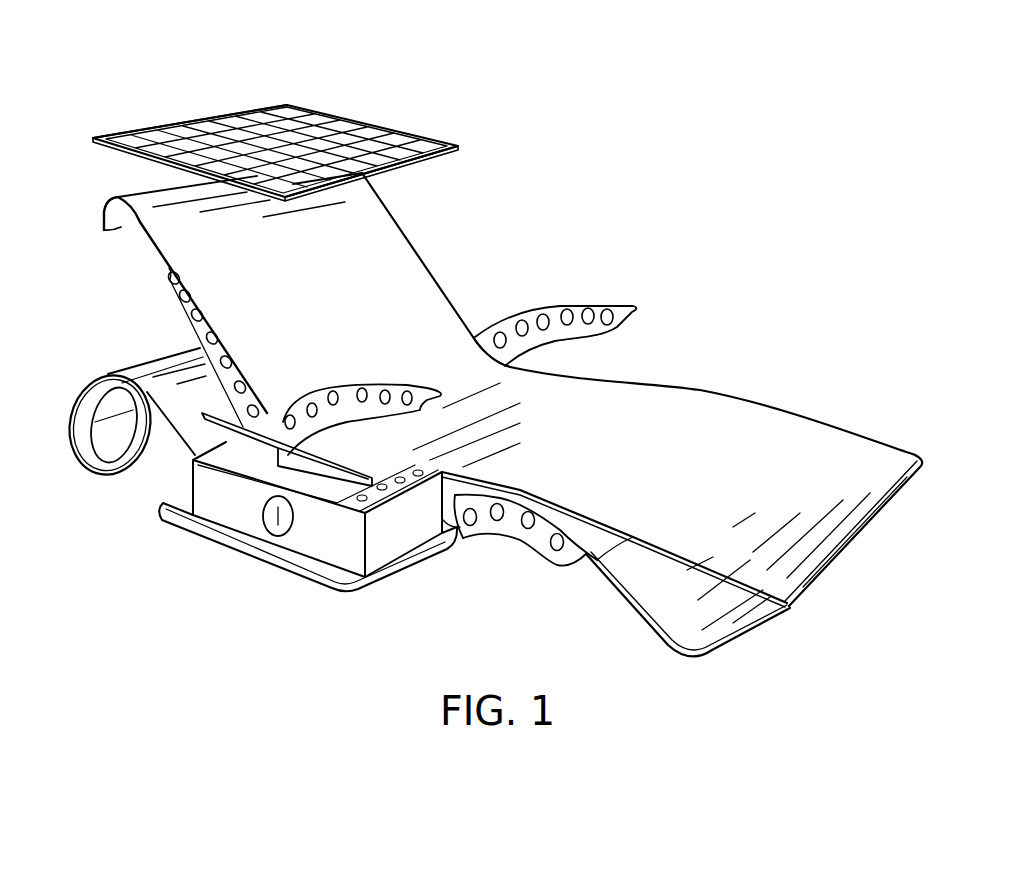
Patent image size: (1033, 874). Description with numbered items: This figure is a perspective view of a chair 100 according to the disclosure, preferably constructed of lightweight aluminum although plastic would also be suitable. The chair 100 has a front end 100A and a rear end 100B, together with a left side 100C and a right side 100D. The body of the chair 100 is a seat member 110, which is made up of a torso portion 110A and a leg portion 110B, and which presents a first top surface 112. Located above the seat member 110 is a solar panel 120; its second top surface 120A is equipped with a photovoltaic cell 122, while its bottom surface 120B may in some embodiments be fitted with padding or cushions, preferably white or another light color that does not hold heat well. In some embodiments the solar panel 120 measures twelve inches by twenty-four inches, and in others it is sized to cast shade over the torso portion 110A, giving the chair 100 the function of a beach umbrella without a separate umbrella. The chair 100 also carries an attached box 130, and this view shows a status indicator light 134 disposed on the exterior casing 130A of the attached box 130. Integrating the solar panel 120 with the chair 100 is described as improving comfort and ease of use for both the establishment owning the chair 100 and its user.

The chair 100 is at (822, 201).
The front end 100A is at (833, 563).
The rear end 100B is at (153, 195).
The left side 100C is at (700, 383).
The right side 100D is at (464, 535).
The seat member 110 is at (478, 314).
The torso portion 110A is at (169, 268).
The leg portion 110B is at (587, 560).
The first top surface 112 is at (547, 362).
The solar panel 120 is at (391, 109).
The second top surface 120A is at (240, 108).
The bottom surface 120B is at (400, 160).
The photovoltaic cell 122 is at (313, 110).
The attached box 130 is at (212, 545).
The housing side wall 130A is at (349, 547).
The status indicator light 134 is at (270, 534).